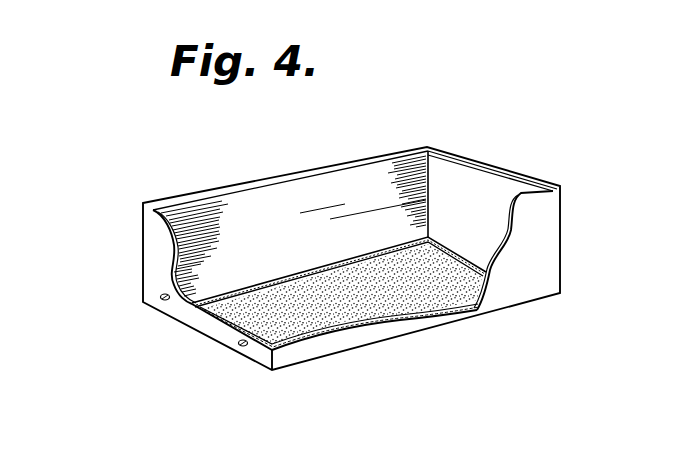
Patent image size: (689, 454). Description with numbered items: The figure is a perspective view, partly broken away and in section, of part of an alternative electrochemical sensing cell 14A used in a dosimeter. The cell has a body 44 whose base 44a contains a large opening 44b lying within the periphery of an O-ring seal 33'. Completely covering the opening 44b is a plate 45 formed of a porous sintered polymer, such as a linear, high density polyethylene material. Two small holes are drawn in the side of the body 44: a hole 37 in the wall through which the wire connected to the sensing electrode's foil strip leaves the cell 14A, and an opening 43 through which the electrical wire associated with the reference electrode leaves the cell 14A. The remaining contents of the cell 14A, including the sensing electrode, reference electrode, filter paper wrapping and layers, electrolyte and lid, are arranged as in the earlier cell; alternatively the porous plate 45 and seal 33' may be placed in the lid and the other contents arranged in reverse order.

The electrochemical sensing cell 14A is at (117, 257).
The body 44 is at (141, 226).
The base 44a is at (457, 253).
The opening 44b is at (293, 287).
The O-ring seal 33' is at (340, 283).
The plate 45 is at (303, 328).
The hole 37 is at (160, 300).
The opening 43 is at (240, 347).